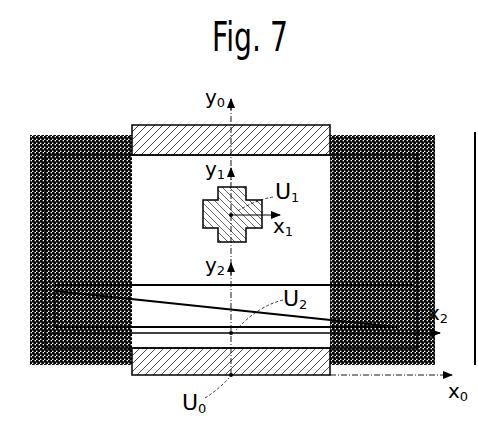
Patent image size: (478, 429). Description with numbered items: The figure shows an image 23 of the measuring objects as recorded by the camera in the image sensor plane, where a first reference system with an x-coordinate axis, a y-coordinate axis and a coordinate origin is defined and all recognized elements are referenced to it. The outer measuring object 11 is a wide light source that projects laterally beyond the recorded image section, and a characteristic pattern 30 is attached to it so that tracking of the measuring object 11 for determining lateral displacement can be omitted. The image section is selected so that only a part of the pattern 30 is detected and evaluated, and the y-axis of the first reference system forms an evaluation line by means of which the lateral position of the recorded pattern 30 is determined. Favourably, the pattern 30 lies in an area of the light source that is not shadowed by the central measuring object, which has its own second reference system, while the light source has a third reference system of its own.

The measuring object 11 is at (110, 155).
The image 23 is at (180, 125).
The pattern 30 is at (103, 272).